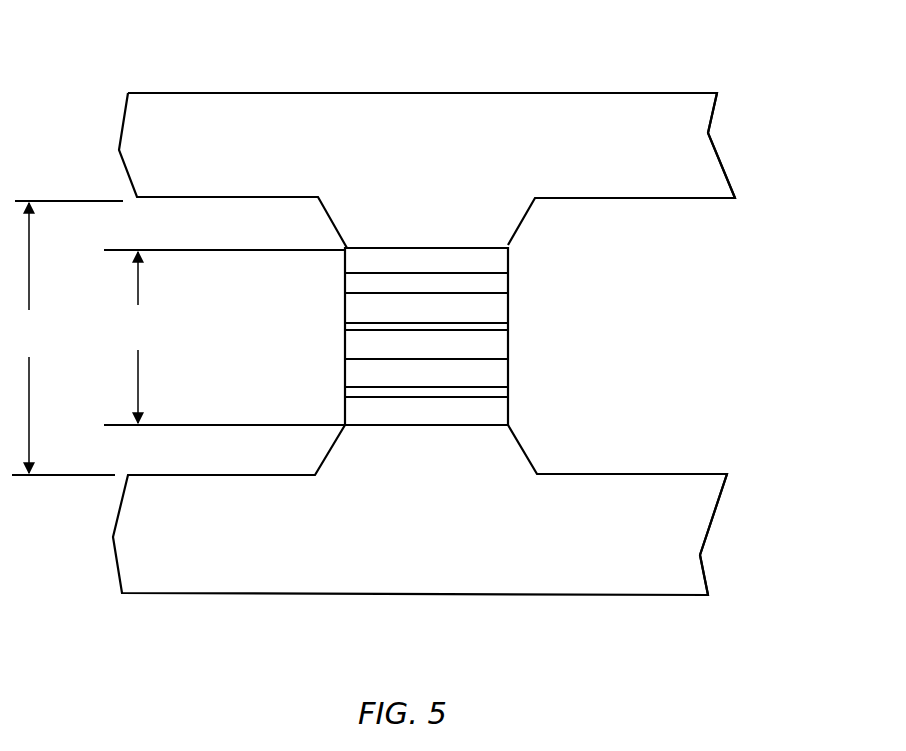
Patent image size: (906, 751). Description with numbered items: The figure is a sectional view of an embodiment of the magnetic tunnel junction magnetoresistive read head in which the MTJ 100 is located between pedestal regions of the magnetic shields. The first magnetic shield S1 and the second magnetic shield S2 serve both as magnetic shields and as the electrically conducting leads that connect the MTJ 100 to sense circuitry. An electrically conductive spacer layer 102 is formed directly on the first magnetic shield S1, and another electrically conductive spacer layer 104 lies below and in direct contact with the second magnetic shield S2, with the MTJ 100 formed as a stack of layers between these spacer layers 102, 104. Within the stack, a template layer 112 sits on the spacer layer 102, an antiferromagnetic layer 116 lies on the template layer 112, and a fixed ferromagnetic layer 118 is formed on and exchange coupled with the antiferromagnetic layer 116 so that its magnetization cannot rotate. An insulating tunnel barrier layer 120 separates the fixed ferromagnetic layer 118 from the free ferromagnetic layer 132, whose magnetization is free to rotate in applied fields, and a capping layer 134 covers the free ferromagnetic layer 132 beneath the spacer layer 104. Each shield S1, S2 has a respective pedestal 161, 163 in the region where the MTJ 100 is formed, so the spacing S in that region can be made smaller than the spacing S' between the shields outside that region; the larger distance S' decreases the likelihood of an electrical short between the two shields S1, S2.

The magnetic tunnel junction 100 is at (337, 270).
The electrically conductive spacer layer 102 is at (372, 413).
The electrically conductive spacer layer 104 is at (358, 258).
The template layer 112 is at (500, 397).
The antiferromagnetic layer 116 is at (500, 372).
The fixed ferromagnetic layer 118 is at (500, 345).
The insulating tunnel barrier layer 120 is at (500, 326).
The free ferromagnetic layer 132 is at (500, 315).
The capping layer 134 is at (502, 282).
The pedestal 161 is at (215, 550).
The pedestal 163 is at (430, 122).
The first magnetic shield S1 is at (653, 527).
The second magnetic shield S2 is at (698, 153).
The spacing S is at (224, 337).
The spacing S' is at (67, 338).